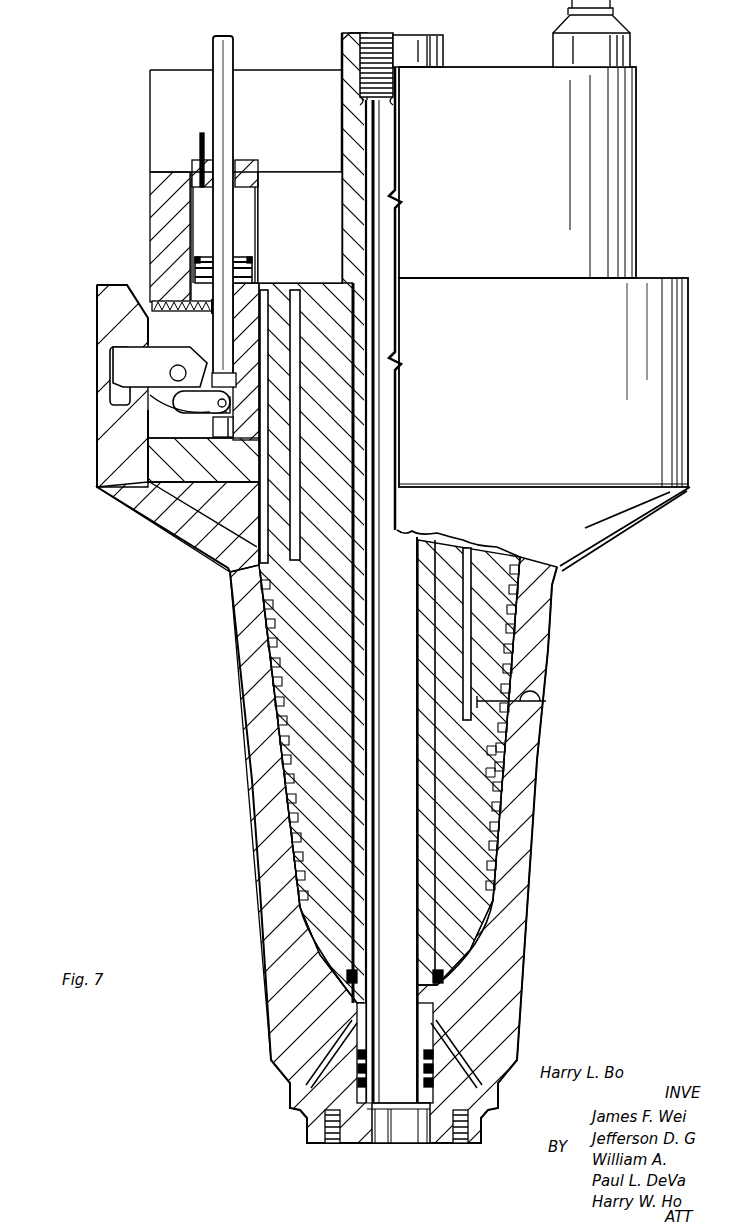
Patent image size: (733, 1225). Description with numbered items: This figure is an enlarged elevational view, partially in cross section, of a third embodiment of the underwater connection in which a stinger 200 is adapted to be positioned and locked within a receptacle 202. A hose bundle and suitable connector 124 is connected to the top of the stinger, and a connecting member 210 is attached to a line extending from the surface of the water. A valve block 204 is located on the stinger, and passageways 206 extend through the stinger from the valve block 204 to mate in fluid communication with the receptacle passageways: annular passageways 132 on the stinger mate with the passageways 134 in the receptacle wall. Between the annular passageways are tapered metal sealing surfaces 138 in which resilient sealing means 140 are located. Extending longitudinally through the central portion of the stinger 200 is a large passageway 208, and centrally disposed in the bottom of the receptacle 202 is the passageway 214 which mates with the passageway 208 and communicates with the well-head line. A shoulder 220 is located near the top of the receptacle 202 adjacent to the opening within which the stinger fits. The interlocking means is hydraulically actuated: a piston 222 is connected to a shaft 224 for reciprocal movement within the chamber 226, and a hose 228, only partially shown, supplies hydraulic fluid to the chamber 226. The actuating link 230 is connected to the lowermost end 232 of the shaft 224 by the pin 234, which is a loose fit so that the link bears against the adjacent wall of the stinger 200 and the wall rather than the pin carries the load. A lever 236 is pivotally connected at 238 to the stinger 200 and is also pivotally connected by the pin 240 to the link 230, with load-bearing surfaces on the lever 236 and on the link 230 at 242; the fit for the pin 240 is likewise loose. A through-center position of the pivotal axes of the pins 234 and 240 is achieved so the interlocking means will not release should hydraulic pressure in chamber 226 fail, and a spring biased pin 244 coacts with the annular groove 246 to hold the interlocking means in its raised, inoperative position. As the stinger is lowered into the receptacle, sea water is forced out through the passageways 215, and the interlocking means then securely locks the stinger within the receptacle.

The hose bundle and connector 124 is at (610, 52).
The annular passageways 132 is at (490, 813).
The passageways in the receptacle wall 134 is at (543, 685).
The tapered metal sealing surfaces 138 is at (500, 771).
The resilient sealing means 140 is at (507, 754).
The stinger 200 is at (320, 645).
The receptacle 202 is at (500, 419).
The valve block 204 is at (296, 190).
The passageways 206 is at (470, 618).
The large passageway 208 is at (397, 557).
The connecting member 210 is at (440, 52).
The passageway 214 is at (407, 1133).
The passageways 215 is at (320, 1080).
The shoulder 220 is at (110, 350).
The piston 222 is at (195, 258).
The shaft 224 is at (218, 50).
The chamber 226 is at (200, 210).
The hose 228 is at (200, 145).
The actuating link 230 is at (210, 425).
The lowermost end of the shaft 232 is at (230, 437).
The pin 234 is at (207, 418).
The lever 236 is at (110, 360).
The pivotal connection 238 is at (170, 373).
The pin 240 is at (200, 405).
The load-bearing surfaces 242 is at (185, 400).
The spring biased pin 244 is at (215, 310).
The annular groove 246 is at (215, 345).